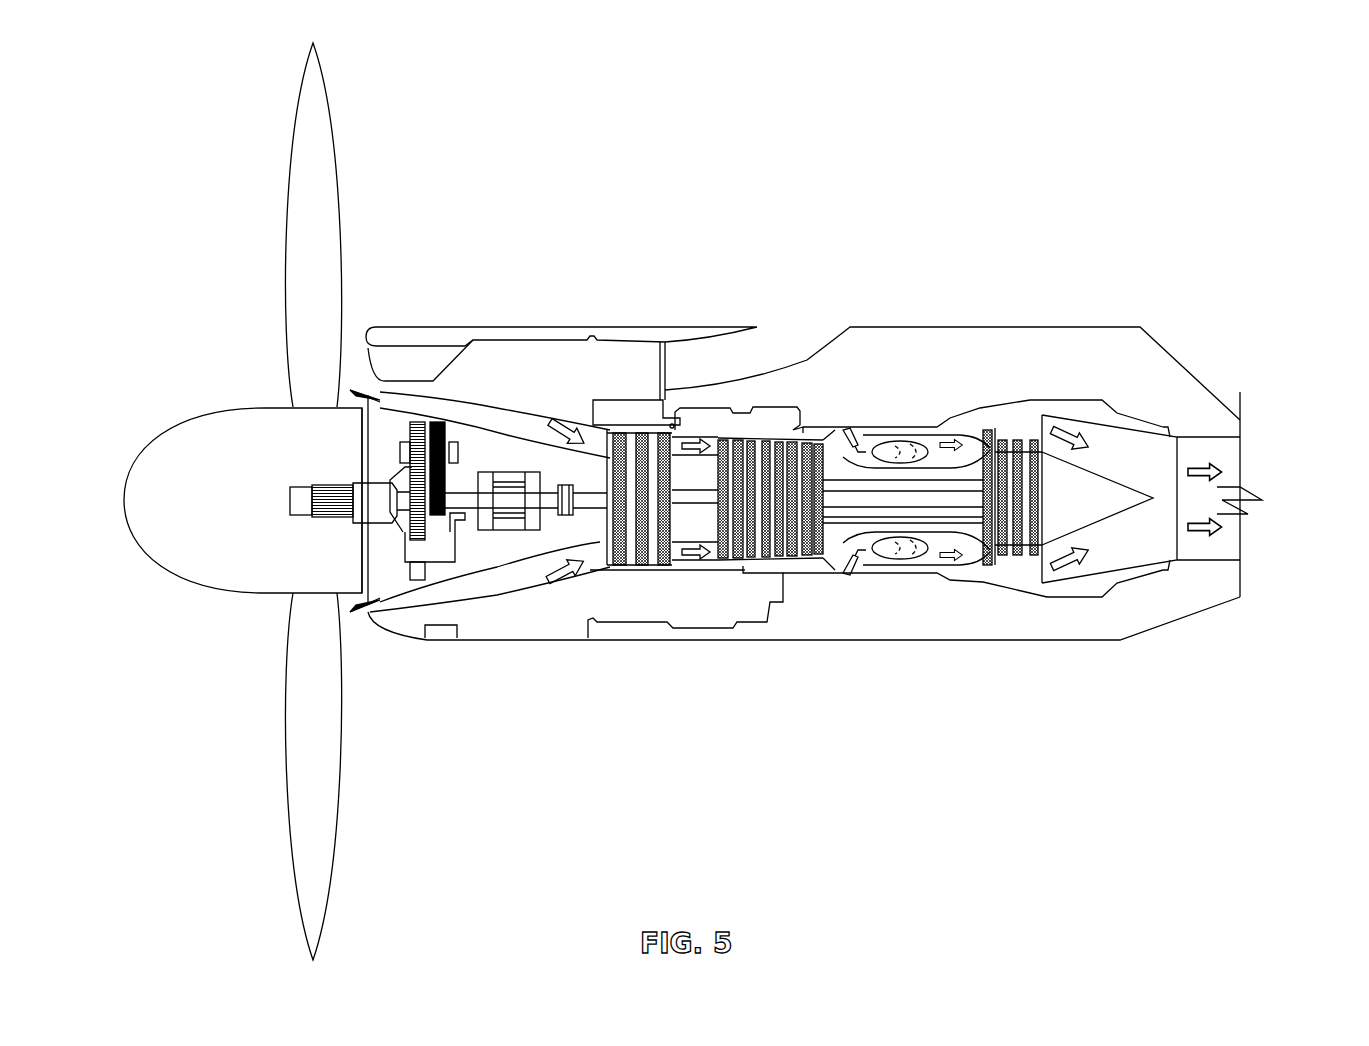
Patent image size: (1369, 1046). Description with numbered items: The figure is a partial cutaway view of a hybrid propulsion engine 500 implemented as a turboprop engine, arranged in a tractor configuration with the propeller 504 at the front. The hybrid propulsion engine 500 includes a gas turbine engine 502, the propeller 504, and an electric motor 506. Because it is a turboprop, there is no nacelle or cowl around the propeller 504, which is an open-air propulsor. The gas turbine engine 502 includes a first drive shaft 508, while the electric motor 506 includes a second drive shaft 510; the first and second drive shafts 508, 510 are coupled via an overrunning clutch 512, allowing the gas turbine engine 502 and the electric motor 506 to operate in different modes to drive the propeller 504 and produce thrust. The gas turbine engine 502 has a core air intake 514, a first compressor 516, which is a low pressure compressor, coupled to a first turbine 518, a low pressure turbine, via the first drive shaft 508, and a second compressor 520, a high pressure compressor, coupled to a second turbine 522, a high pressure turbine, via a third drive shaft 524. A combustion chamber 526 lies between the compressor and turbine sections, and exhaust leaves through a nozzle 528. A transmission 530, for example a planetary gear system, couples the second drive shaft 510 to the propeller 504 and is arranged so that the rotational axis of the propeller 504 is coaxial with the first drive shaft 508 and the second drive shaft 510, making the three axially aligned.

The hybrid propulsion engine 500 is at (172, 84).
The gas turbine engine 502 is at (1002, 300).
The propeller 504 is at (297, 207).
The electric motor 506 is at (505, 470).
The first drive shaft 508 is at (593, 490).
The second drive shaft 510 is at (473, 490).
The overrunning clutch 512 is at (565, 490).
The core air intake 514 is at (347, 608).
The first compressor 516 is at (630, 568).
The first turbine 518 is at (1023, 540).
The second compressor 520 is at (737, 567).
The second turbine 522 is at (990, 543).
The third drive shaft 524 is at (850, 573).
The combustion chamber 526 is at (923, 553).
The nozzle 528 is at (1220, 507).
The transmission 530 is at (408, 497).